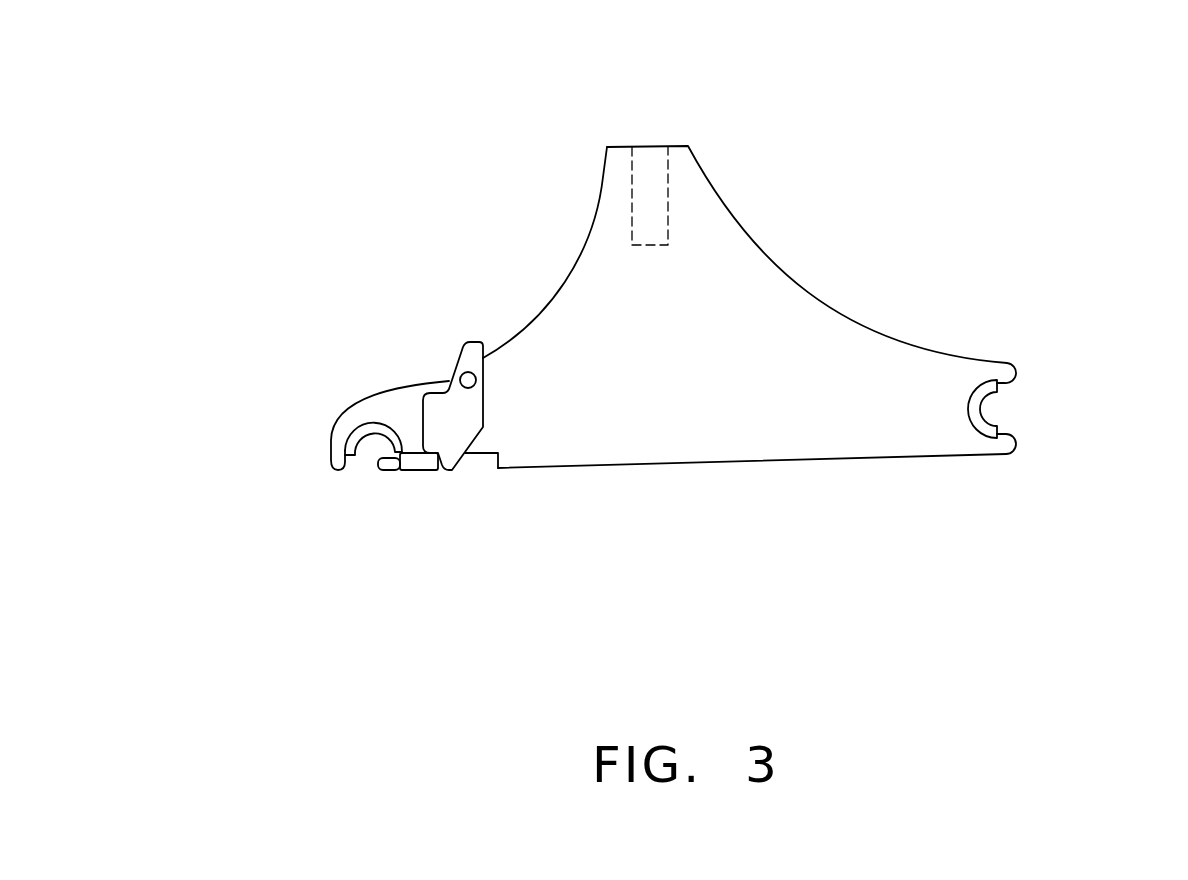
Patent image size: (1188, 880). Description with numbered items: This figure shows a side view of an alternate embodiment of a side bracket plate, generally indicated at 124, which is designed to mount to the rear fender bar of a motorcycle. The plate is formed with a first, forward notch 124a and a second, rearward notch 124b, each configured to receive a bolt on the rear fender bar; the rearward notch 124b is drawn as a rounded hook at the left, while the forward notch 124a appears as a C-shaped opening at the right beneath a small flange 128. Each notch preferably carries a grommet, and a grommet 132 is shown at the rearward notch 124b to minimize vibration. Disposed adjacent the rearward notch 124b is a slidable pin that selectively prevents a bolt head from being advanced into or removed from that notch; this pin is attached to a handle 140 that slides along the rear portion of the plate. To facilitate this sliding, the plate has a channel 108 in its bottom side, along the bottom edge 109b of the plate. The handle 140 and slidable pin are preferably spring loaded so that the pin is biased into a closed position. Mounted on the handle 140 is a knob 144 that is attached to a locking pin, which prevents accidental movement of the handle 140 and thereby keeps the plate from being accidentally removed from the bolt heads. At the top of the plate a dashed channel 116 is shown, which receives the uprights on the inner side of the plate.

The channel 108 is at (485, 460).
The bottom edge 109b is at (603, 467).
The channel 116 is at (652, 172).
The bracket body 124 is at (718, 508).
The first, forward notch 124a is at (992, 387).
The second, rearward notch 124b is at (353, 437).
The flange 128 is at (985, 387).
The spring loop 132 is at (370, 425).
The handle 140 is at (447, 387).
The knob 144 is at (466, 373).